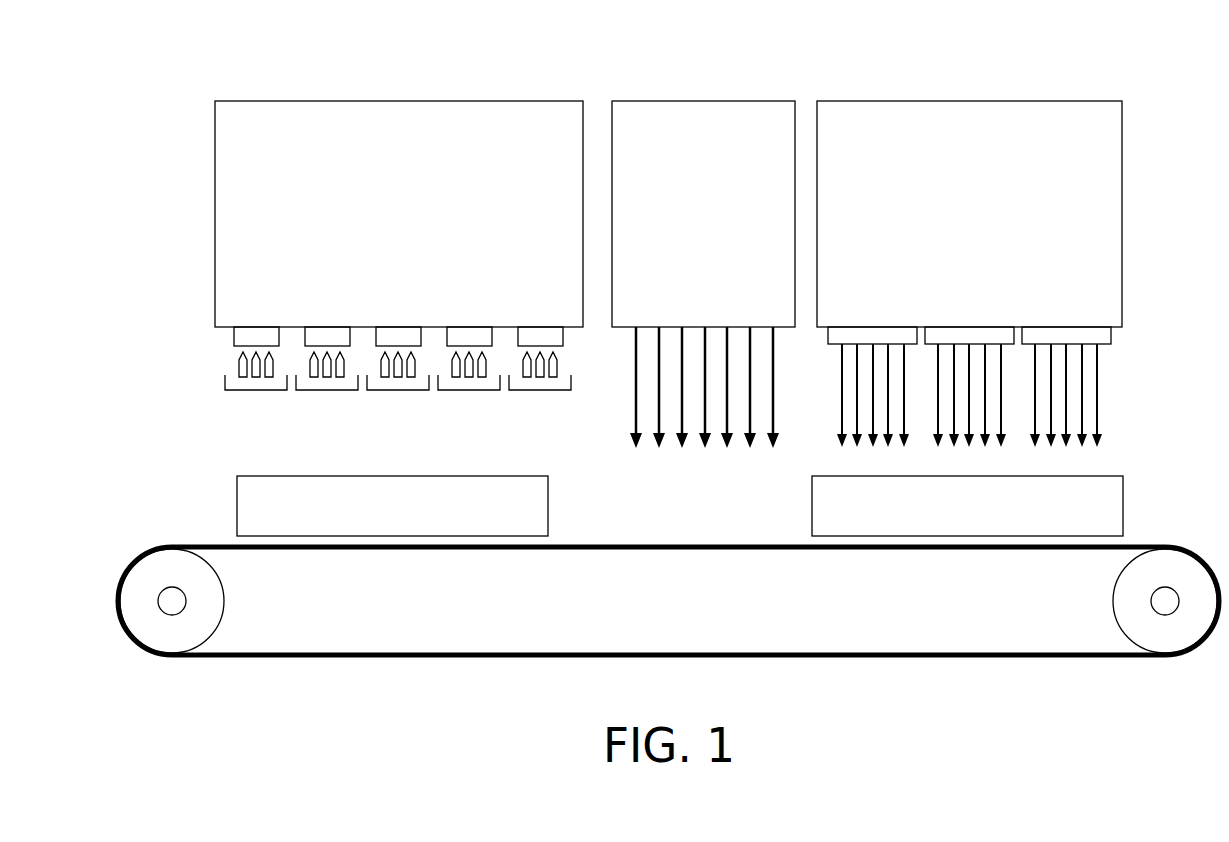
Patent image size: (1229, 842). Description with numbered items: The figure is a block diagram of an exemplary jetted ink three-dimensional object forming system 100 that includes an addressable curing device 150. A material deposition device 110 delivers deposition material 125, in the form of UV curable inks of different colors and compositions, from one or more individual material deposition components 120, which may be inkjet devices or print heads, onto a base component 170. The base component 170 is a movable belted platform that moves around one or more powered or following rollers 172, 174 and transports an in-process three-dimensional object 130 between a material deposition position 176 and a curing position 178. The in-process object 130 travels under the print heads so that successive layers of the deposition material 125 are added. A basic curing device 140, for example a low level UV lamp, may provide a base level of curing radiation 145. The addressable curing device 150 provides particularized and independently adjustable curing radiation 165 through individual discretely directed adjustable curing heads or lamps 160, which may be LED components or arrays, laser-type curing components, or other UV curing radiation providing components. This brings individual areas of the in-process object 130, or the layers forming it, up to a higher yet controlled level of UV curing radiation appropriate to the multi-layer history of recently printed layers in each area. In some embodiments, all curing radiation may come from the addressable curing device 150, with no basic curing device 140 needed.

The jetted ink 3D object forming system 100 is at (268, 57).
The material deposition device 110 is at (398, 101).
The individual material deposition components 120 is at (540, 327).
The deposition material 125 is at (540, 390).
The in-process 3D object 130 is at (237, 508).
The basic curing device 140 is at (701, 101).
The curing radiation 145 is at (704, 387).
The addressable curing device 150 is at (967, 101).
The individual discretely directed adjustable curing heads or lamps 160 is at (1066, 327).
The particularized curing radiation 165 is at (969, 395).
The base component 170 is at (660, 657).
The roller 172 is at (165, 635).
The roller 174 is at (1160, 635).
The material deposition position 176 is at (387, 569).
The curing position 178 is at (968, 569).